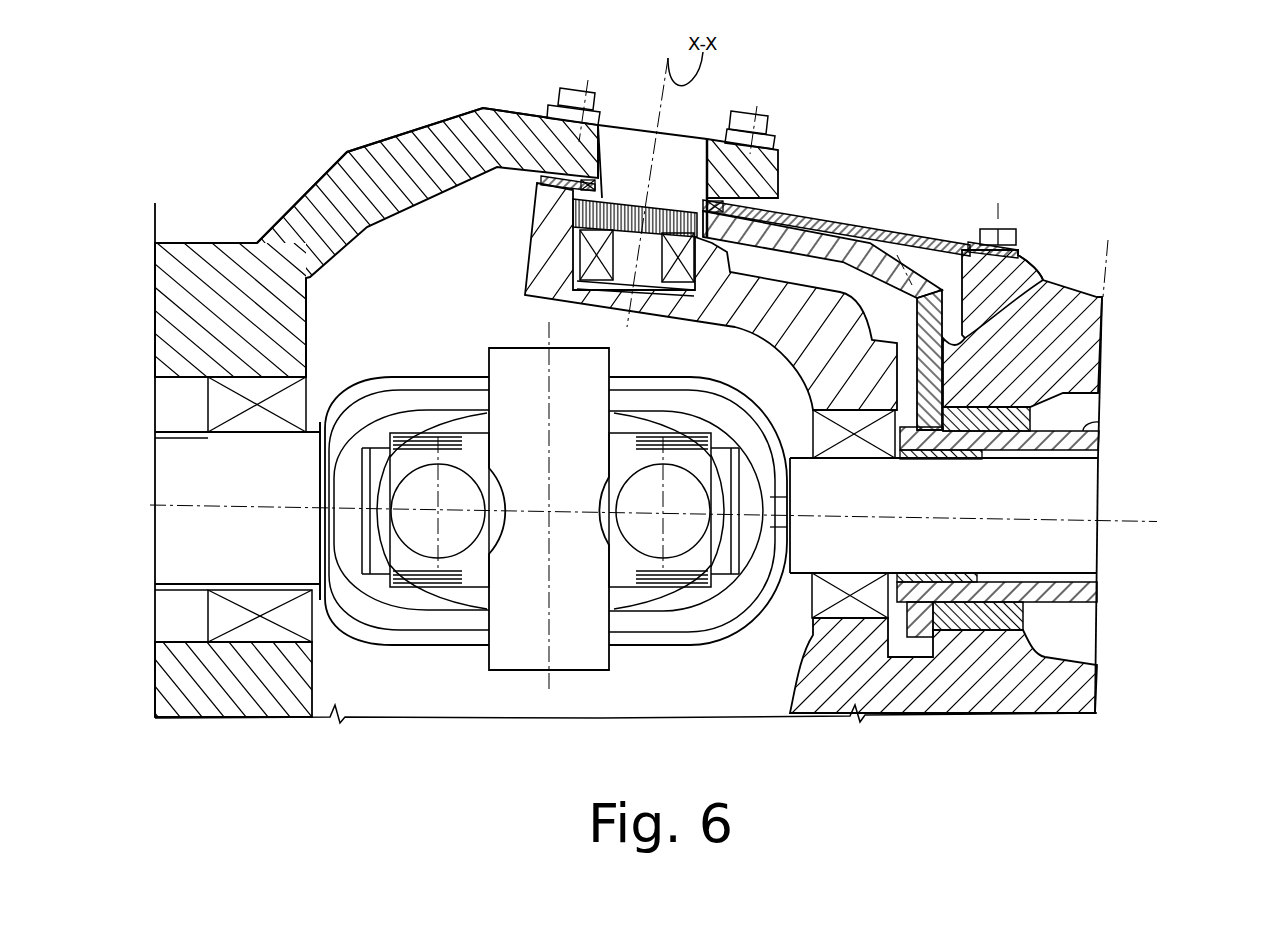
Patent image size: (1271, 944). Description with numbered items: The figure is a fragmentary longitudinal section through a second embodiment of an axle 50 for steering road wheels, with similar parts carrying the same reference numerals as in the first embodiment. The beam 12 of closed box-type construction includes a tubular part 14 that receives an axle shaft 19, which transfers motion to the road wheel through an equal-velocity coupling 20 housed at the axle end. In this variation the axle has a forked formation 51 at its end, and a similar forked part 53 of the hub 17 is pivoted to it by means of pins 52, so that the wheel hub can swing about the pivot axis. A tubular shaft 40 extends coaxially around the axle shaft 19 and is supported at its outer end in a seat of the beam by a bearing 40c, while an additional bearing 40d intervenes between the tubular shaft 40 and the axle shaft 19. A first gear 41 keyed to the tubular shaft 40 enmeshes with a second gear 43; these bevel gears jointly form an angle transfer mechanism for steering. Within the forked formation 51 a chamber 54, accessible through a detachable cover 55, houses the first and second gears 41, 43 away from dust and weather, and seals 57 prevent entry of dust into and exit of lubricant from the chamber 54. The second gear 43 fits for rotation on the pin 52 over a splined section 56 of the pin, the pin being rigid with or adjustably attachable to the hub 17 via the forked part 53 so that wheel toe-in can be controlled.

The beam 12 is at (1095, 327).
The tubular part 14 is at (969, 486).
The hub 17 is at (193, 268).
The axle shaft 19 is at (992, 494).
The equal-velocity coupling 20 is at (517, 373).
The tubular shaft 40 is at (1100, 423).
The bearing 40c is at (1040, 612).
The additional bearing 40d is at (928, 574).
The first gear 41 is at (1040, 278).
The second gear 43 is at (813, 240).
The axle 50 is at (815, 108).
The forked formation 51 is at (755, 318).
The pin 52 is at (680, 157).
The forked part 53 is at (447, 133).
The chamber 54 is at (878, 312).
The detachable cover 55 is at (913, 233).
The splined section 56 is at (627, 212).
The seal 57 is at (820, 438).